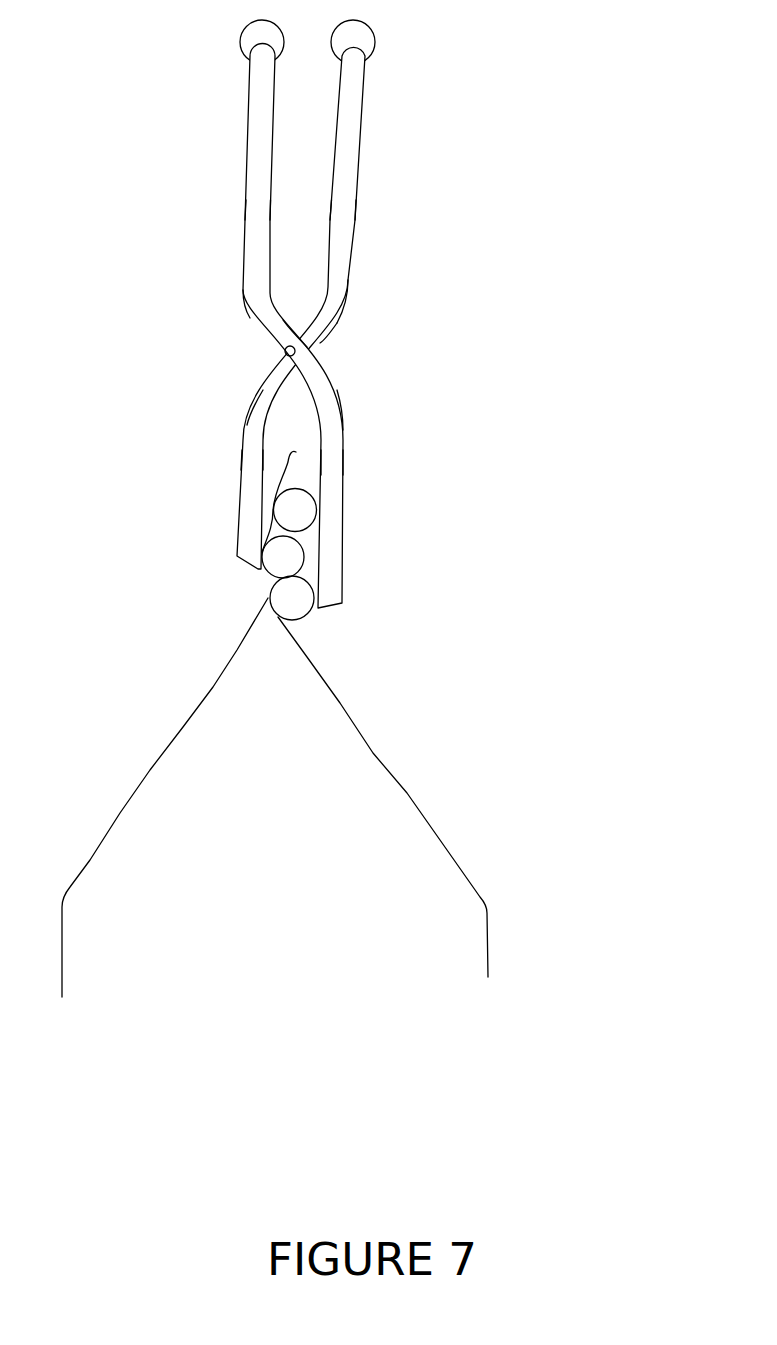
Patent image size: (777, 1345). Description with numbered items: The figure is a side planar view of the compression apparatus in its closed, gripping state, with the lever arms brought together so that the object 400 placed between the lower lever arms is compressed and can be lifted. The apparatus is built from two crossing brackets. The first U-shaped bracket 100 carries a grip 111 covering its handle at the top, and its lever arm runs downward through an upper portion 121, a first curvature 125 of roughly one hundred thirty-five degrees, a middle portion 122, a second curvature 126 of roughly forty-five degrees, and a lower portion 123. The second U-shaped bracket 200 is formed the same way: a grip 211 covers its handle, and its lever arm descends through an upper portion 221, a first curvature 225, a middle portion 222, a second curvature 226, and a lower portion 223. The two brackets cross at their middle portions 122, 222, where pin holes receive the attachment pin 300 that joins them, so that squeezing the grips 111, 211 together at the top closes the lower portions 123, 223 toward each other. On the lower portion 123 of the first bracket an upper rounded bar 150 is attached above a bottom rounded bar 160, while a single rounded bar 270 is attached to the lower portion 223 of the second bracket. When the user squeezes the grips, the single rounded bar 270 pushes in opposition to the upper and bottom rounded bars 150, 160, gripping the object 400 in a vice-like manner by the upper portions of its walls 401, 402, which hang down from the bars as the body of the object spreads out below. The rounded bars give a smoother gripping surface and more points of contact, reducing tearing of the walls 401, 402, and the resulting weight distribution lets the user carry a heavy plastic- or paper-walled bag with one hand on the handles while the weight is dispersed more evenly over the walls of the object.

The first U-shaped bracket 100 is at (290, 314).
The grip 111 is at (240, 30).
The upper portion of the lever arm 121 is at (255, 182).
The first curvature 125 is at (243, 307).
The middle portion of the lever arm 122 is at (275, 332).
The second curvature 126 is at (343, 407).
The lower portion of the lever arm 123 is at (347, 462).
The second U-shaped bracket 200 is at (299, 294).
The grip 211 is at (370, 30).
The upper portion of the lever arm 221 is at (350, 182).
The first curvature 225 is at (350, 306).
The middle portion of the lever arm 222 is at (322, 332).
The second curvature 226 is at (242, 408).
The lower portion of the lever arm 223 is at (238, 461).
The attachment pin 300 is at (297, 355).
The upper rounded bar 150 is at (295, 510).
The single rounded bar 270 is at (283, 557).
The bottom rounded bar 160 is at (292, 598).
The object 400 is at (275, 734).
The wall of the object 401 is at (282, 472).
The wall of the object 402 is at (292, 478).